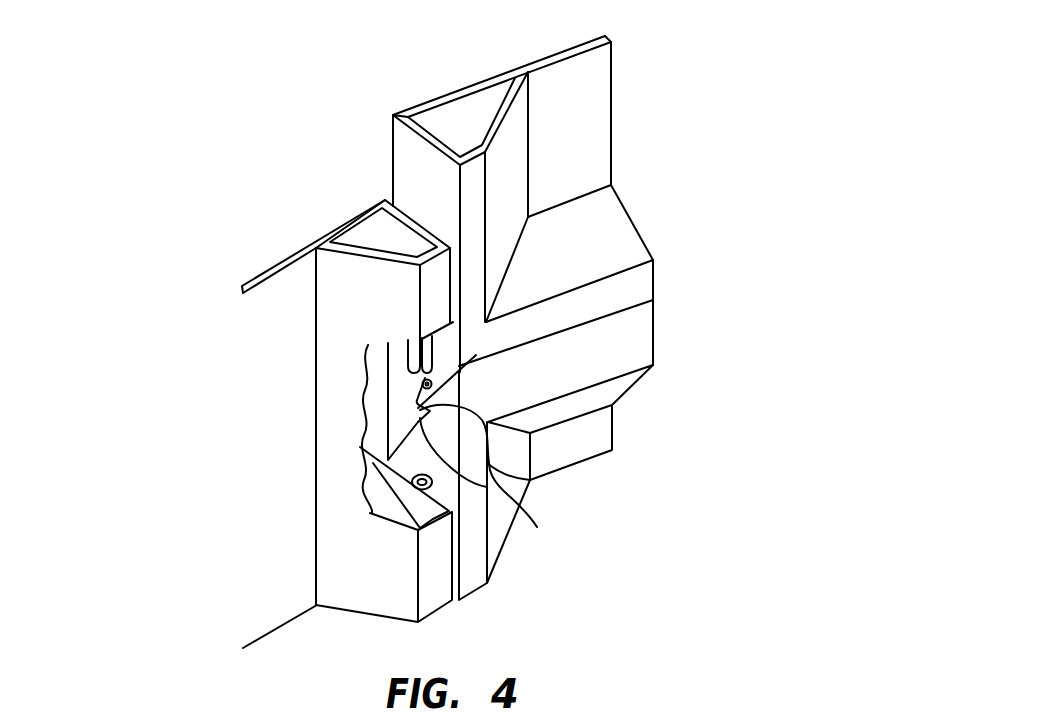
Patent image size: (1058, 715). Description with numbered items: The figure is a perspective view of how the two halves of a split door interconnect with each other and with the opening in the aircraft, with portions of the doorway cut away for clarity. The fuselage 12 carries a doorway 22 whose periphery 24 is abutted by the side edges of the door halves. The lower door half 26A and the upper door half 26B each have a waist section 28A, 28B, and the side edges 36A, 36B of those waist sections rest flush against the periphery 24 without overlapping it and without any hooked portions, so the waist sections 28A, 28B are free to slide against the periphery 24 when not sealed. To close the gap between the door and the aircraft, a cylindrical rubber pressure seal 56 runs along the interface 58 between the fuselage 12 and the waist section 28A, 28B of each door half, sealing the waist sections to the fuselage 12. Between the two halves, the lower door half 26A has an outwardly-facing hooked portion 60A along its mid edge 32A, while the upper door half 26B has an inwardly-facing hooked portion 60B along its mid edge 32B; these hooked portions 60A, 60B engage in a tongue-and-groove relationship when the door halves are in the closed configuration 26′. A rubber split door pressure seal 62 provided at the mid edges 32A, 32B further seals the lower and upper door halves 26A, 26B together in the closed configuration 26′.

The fuselage 12 is at (280, 313).
The doorway 22 is at (385, 200).
The periphery 24 is at (415, 212).
The closed configuration 26′ is at (597, 73).
The lower door half 26A is at (607, 372).
The upper door half 26B is at (594, 124).
The waist section 28A is at (489, 588).
The waist section 28B is at (547, 88).
The mid edge 32A is at (617, 300).
The mid edge 32B is at (603, 313).
The side edge 36A is at (458, 578).
The side edge 36B is at (414, 150).
The cylindrical rubber pressure seal 56 is at (413, 347).
The interface 58 is at (470, 250).
The outwardly-facing hooked portion 60A is at (487, 487).
The inwardly-facing hooked portion 60B is at (537, 527).
The rubber split door pressure seal 62 is at (452, 368).